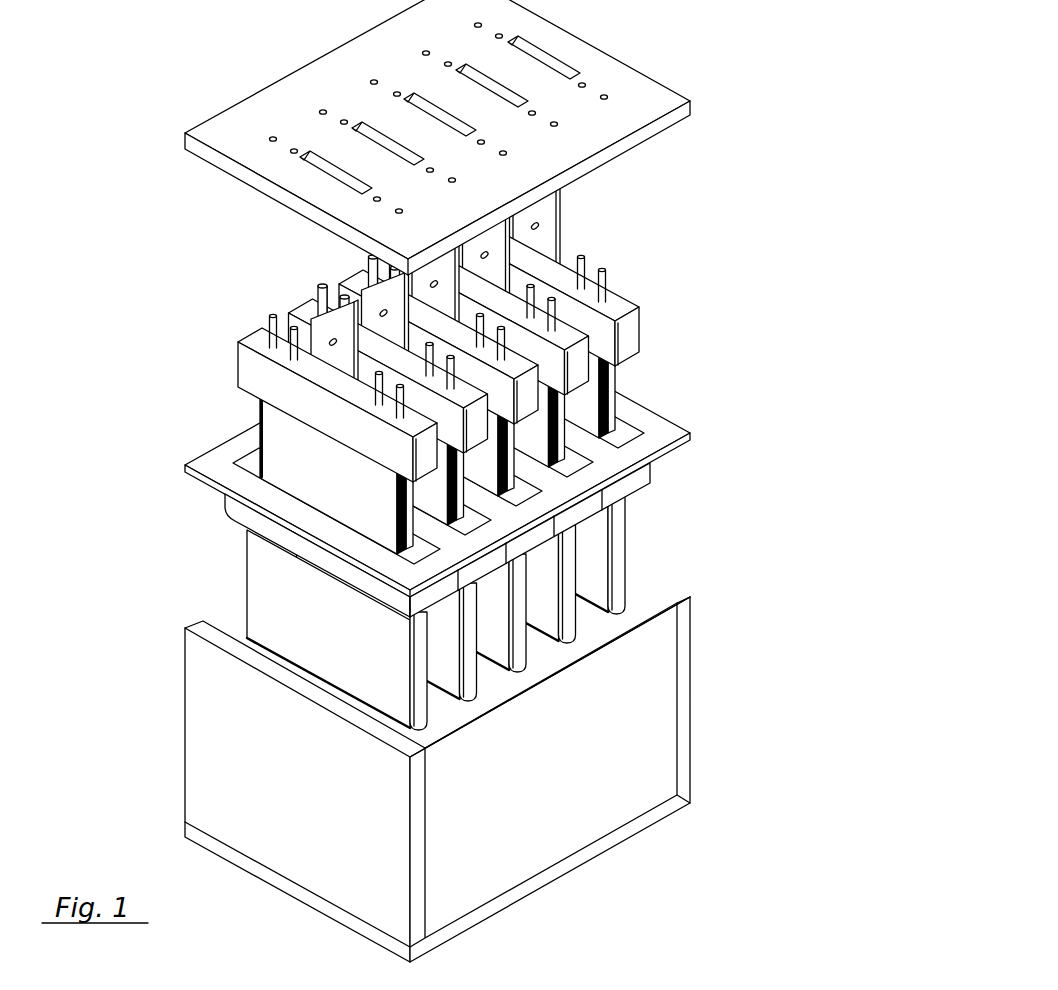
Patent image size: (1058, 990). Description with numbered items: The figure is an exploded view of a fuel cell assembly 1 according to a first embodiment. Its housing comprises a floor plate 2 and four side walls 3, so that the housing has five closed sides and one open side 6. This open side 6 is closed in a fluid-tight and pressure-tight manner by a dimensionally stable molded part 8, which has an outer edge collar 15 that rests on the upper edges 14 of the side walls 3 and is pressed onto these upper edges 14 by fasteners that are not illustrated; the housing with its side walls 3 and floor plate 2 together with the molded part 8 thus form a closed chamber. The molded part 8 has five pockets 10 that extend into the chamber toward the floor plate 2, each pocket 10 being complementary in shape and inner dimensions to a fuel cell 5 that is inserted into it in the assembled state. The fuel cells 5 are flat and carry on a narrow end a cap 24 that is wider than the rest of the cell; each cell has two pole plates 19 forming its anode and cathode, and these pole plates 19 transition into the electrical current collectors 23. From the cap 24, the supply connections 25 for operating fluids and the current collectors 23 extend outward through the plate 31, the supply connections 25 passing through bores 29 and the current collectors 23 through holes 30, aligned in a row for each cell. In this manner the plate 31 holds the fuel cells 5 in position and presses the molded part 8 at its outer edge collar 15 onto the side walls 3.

The fuel cell assembly 1 is at (847, 118).
The floor plate 2 is at (457, 749).
The side walls 3 is at (240, 752).
The fuel cell 5 is at (613, 303).
The open side 6 is at (226, 625).
The molded part 8 is at (456, 449).
The pockets 10 is at (627, 527).
The upper edges 14 is at (653, 607).
The outer edge collar 15 is at (660, 430).
The pole plates 19 is at (290, 450).
The current collectors 23 is at (540, 243).
The cap 24 is at (262, 370).
The supply connections 25 is at (603, 283).
The bores 29 is at (395, 212).
The holes 30 is at (340, 172).
The plate 31 is at (439, 148).